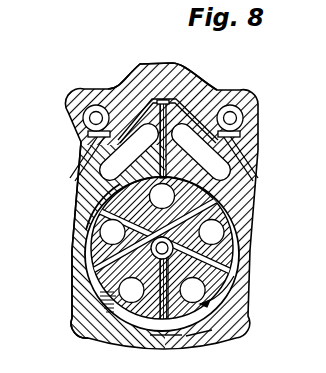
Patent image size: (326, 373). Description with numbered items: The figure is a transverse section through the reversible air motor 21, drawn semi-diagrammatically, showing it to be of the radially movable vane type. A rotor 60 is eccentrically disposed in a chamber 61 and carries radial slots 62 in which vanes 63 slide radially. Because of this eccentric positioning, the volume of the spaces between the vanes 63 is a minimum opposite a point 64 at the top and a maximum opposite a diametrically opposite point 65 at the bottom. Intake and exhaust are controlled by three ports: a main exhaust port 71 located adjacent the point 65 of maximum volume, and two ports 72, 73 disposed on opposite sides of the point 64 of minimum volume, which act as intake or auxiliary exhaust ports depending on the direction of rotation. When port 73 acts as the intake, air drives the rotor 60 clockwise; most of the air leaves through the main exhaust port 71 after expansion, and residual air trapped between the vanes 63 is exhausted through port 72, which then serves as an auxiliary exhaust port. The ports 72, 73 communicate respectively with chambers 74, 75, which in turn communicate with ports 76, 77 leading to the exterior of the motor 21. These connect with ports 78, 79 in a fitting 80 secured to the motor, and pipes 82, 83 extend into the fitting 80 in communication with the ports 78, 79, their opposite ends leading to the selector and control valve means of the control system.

The air motor 21 is at (262, 236).
The rotor 60 is at (236, 267).
The chamber 61 is at (236, 286).
The radial slots 62 is at (96, 262).
The vanes 63 is at (86, 220).
The point of minimum volume 64 is at (164, 100).
The point of maximum volume 65 is at (172, 340).
The main exhaust port 71 is at (198, 334).
The port 72 is at (100, 196).
The port 73 is at (236, 199).
The chamber 74 is at (100, 170).
The chamber 75 is at (222, 165).
The port 76 is at (90, 150).
The port 77 is at (224, 146).
The port 78 is at (88, 135).
The port 79 is at (242, 126).
The fitting 80 is at (188, 86).
The pipe 82 is at (84, 116).
The pipe 83 is at (242, 114).